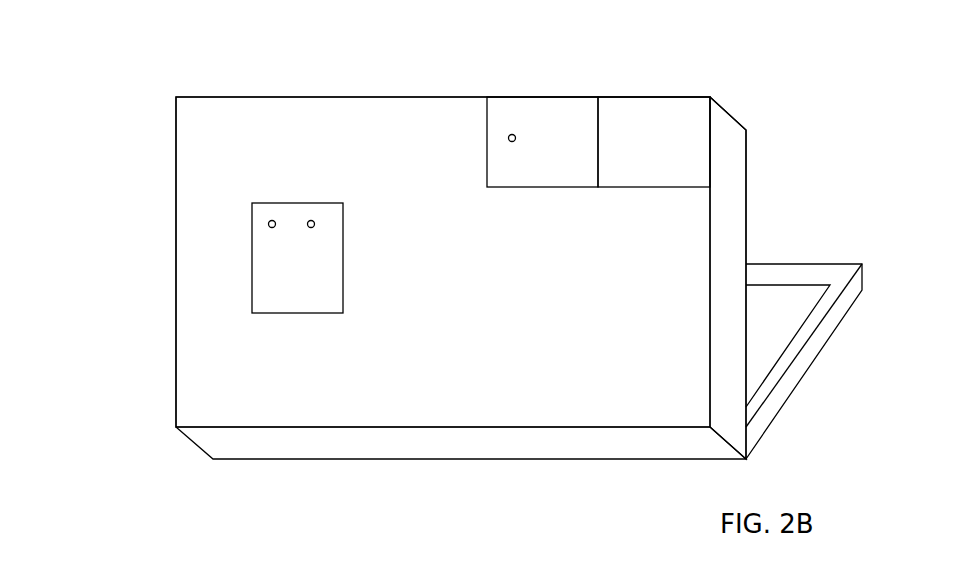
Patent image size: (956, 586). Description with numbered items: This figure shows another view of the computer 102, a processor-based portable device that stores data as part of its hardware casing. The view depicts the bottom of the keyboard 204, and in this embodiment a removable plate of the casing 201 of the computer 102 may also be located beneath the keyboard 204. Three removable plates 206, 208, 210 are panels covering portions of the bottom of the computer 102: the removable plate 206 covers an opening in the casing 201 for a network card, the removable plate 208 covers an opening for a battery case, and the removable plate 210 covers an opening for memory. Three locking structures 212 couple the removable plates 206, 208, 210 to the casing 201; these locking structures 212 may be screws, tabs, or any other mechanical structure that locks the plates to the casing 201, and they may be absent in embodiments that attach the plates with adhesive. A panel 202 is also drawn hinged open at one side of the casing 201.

The computer 102 is at (158, 117).
The casing 201 is at (443, 262).
The hinged panel / cover 202 is at (774, 317).
The keyboard 204 is at (753, 169).
The removable plate 206 is at (297, 258).
The removable plate 208 is at (542, 142).
The removable plate 210 is at (654, 142).
The locking structures 212 is at (505, 136).